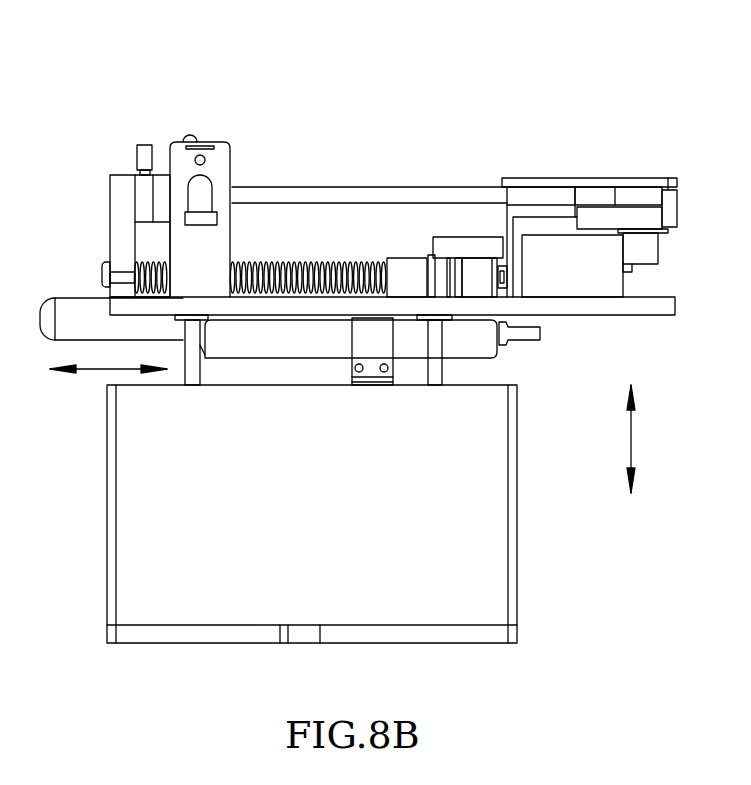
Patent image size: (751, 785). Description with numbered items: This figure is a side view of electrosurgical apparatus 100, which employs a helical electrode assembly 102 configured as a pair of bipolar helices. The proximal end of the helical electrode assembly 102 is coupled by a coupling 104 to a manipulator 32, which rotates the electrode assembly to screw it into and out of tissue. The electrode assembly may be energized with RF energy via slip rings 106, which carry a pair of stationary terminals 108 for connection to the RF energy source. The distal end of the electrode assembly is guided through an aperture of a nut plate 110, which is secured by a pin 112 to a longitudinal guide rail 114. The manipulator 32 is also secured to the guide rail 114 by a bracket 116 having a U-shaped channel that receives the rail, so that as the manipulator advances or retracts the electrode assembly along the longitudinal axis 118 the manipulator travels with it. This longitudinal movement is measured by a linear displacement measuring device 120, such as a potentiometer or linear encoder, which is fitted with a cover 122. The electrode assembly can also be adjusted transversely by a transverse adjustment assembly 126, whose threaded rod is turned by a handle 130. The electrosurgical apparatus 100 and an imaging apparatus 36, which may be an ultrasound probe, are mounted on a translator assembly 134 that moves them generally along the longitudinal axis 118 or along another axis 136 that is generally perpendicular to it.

The manipulator 32 is at (592, 282).
The imaging apparatus 36 is at (78, 310).
The electrosurgical apparatus 100 is at (541, 138).
The helical electrode assembly 102 is at (292, 260).
The coupling 104 is at (483, 288).
The slip rings 106 is at (438, 250).
The stationary terminals 108 is at (477, 235).
The nut plate 110 is at (113, 245).
The pin 112 is at (135, 153).
The guide rail 114 is at (327, 193).
The bracket 116 is at (507, 221).
The longitudinal axis 118 is at (97, 372).
The linear displacement measuring device 120 is at (647, 222).
The cover 122 is at (617, 182).
The transverse adjustment assembly 126 is at (248, 161).
The handle 130 is at (198, 138).
The translator assembly 134 is at (490, 463).
The axis 136 is at (633, 442).